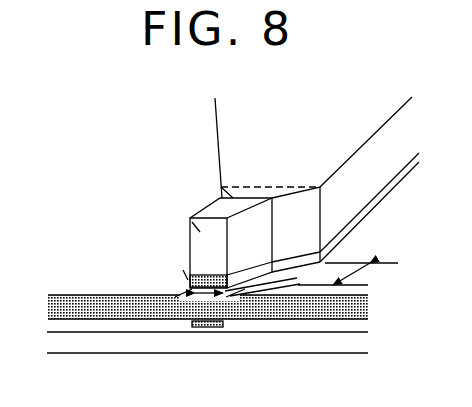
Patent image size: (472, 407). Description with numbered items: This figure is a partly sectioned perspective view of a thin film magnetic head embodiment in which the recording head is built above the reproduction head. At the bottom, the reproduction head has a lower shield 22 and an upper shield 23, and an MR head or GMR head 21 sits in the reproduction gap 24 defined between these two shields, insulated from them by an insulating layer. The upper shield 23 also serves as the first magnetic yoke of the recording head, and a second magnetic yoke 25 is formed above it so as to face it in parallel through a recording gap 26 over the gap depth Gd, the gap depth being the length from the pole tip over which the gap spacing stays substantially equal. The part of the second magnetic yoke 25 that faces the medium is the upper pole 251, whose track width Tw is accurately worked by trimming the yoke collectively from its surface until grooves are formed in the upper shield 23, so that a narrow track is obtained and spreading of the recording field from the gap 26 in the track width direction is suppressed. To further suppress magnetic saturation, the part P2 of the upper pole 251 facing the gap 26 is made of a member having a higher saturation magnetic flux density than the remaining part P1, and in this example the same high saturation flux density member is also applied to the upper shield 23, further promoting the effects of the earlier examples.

The MR head or GMR head 21 is at (210, 328).
The lower shield 22 is at (100, 345).
The upper shield 23 is at (78, 303).
The reproduction gap 24 is at (165, 327).
The second magnetic yoke 25 is at (240, 124).
The upper pole 251 is at (213, 208).
The recording gap 26 is at (178, 294).
The remaining part P1 is at (192, 222).
The part facing the gap P2 is at (183, 270).
The track width Tw is at (224, 274).
The gap depth Gd is at (348, 273).